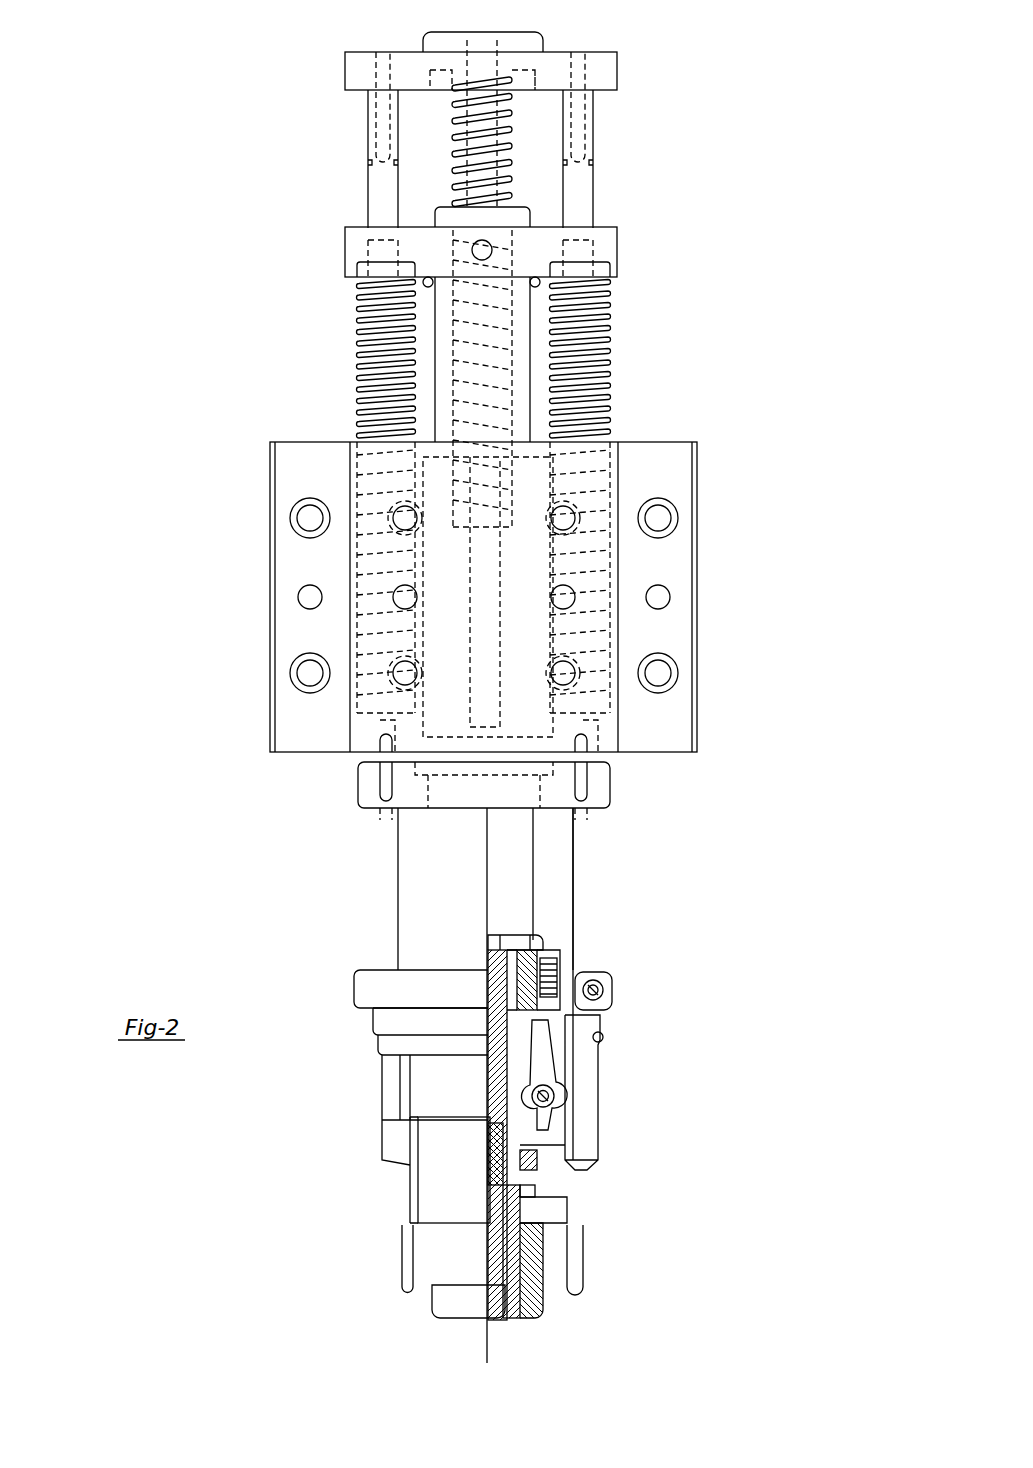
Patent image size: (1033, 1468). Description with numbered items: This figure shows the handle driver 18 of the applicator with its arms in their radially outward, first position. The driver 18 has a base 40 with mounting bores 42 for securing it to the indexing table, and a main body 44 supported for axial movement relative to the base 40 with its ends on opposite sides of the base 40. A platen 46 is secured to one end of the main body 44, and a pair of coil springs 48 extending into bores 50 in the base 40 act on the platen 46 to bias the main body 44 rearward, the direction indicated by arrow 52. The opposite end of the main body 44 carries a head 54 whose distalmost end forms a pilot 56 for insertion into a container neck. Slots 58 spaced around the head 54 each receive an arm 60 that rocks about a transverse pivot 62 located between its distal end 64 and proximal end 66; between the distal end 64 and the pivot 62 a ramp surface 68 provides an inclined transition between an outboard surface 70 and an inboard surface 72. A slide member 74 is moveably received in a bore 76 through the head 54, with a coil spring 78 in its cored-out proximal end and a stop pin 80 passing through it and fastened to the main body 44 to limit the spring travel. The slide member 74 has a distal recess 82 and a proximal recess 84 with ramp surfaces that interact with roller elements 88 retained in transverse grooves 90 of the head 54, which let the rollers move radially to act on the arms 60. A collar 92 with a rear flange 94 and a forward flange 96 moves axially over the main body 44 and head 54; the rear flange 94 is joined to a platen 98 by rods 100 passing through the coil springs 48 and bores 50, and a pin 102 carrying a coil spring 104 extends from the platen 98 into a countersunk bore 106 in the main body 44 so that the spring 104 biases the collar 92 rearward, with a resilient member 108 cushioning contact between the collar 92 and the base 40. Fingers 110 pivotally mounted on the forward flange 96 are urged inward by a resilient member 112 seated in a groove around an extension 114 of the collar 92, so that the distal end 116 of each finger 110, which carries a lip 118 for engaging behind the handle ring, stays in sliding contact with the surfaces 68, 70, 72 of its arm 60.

The handle driver 18 is at (744, 224).
The base 40 is at (690, 570).
The mounting bores 42 is at (660, 517).
The main body 44 is at (525, 330).
The platen 46 is at (605, 245).
The coil springs 48 is at (362, 310).
The bores 50 is at (364, 452).
The arrow 52 is at (322, 204).
The head 54 is at (450, 1163).
The pilot 56 is at (440, 1305).
The slots 58 is at (548, 1210).
The arm 60 is at (595, 1100).
The transverse pivot 62 is at (590, 1090).
The distal end 64 is at (410, 1288).
The proximal end 66 is at (545, 1030).
The ramp surface 68 is at (430, 1232).
The outboard surface 70 is at (410, 1260).
The inboard surface 72 is at (400, 1110).
The slide member 74 is at (510, 1310).
The bore 76 is at (535, 1290).
The coil spring 78 is at (495, 975).
The stop pin 80 is at (490, 1170).
The distal recess 82 is at (533, 1186).
The proximal recess 84 is at (535, 1000).
The roller elements 88 is at (548, 1010).
The transverse grooves 90 is at (590, 1035).
The collar 92 is at (418, 868).
The rear flange 94 is at (370, 785).
The forward flange 96 is at (372, 985).
The platen 98 is at (605, 65).
The rods 100 is at (383, 147).
The pin 102 is at (505, 150).
The coil spring 104 is at (590, 118).
The countersunk bore 106 is at (468, 362).
The resilient member 108 is at (460, 757).
The fingers 110 is at (385, 1085).
The resilient member 112 is at (386, 1040).
The extension 114 is at (385, 1013).
The distal end 116 is at (410, 1165).
The lip 118 is at (560, 1150).